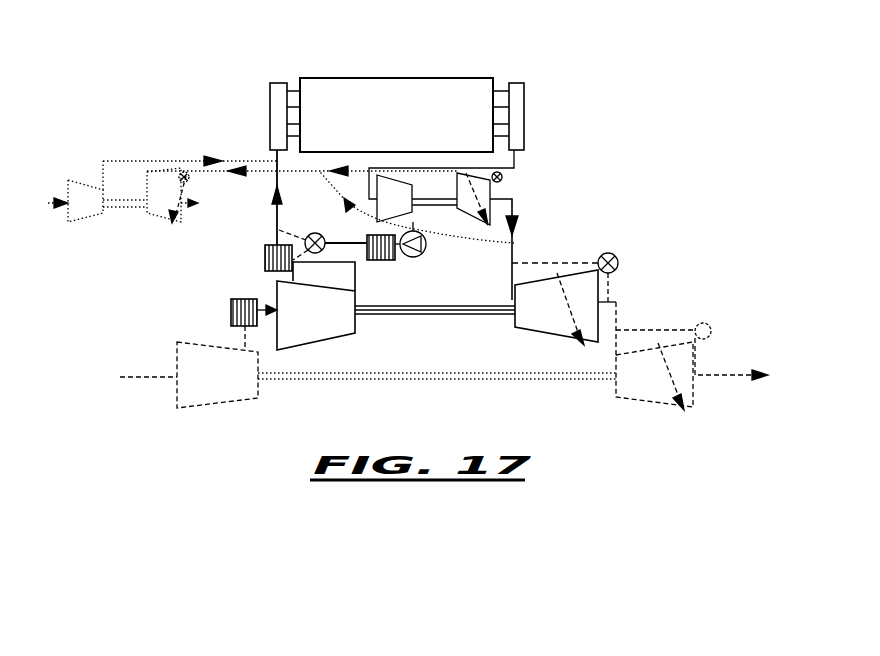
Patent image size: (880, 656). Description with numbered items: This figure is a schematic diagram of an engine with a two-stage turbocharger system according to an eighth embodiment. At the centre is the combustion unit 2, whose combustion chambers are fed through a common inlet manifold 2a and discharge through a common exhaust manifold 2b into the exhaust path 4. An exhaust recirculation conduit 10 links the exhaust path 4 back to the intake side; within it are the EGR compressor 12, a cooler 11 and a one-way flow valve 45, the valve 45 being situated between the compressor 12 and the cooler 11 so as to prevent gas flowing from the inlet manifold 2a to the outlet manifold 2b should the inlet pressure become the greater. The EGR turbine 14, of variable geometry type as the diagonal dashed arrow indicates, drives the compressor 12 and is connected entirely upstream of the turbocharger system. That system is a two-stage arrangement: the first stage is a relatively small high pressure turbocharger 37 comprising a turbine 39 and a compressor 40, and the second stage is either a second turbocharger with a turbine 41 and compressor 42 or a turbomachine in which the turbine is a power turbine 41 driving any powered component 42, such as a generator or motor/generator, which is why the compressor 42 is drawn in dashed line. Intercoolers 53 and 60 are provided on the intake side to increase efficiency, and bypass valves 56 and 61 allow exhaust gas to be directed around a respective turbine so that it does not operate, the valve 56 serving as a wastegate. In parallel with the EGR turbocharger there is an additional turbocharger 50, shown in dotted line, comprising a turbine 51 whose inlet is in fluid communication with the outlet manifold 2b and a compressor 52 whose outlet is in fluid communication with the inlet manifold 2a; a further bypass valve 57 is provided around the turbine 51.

The combustion unit 2 is at (440, 90).
The inlet manifold 2a is at (278, 103).
The exhaust manifold 2b is at (523, 105).
The exhaust path 4 is at (516, 156).
The EGR compressor 12 is at (393, 170).
The EGR turbine 14 is at (502, 185).
The exhaust recirculation conduit 10 is at (343, 240).
The cooler 11 is at (380, 263).
The one-way flow valve 45 is at (418, 258).
The intercooler 53 is at (264, 262).
The intercooler 60 is at (231, 313).
The compressor 40 is at (326, 341).
The turbocharger 37 is at (425, 340).
The turbine 39 is at (542, 338).
The bypass valve 56 is at (620, 265).
The turbine 41 is at (645, 408).
The bypass valve 61 is at (714, 328).
The compressor 42 is at (205, 410).
The turbocharger 50 is at (124, 240).
The turbine 51 is at (160, 224).
The compressor 52 is at (86, 226).
The bypass valve 57 is at (190, 180).